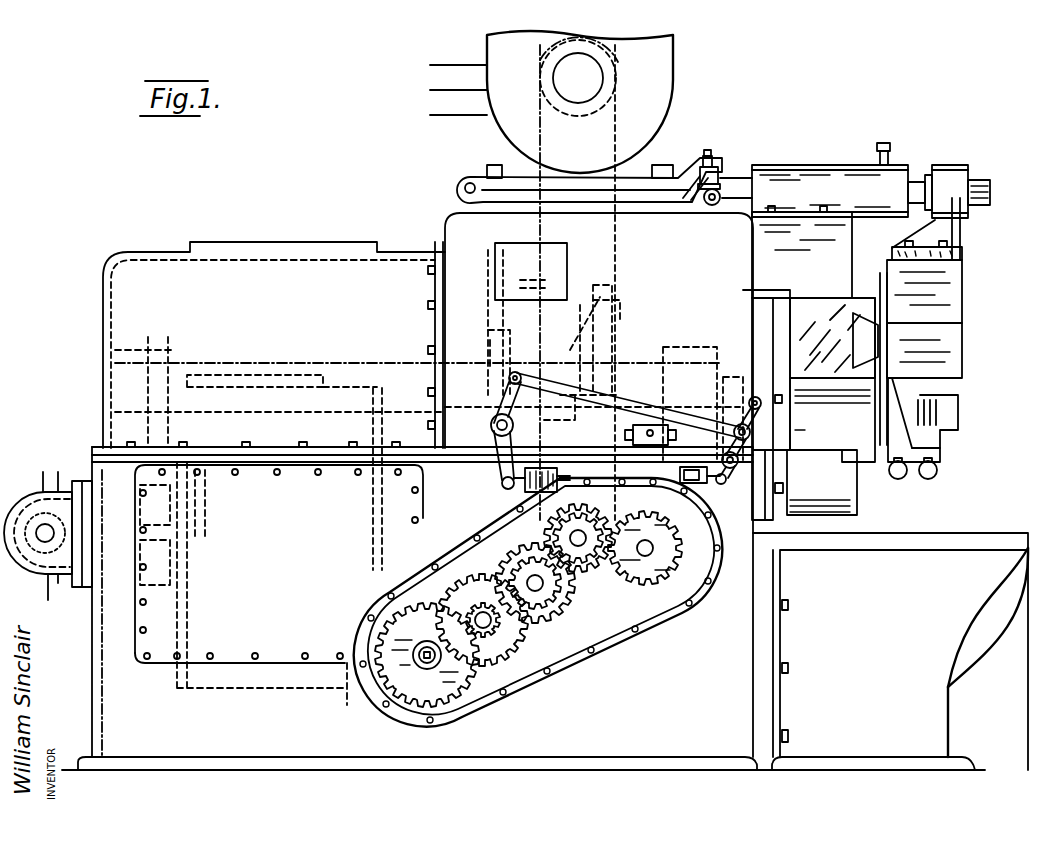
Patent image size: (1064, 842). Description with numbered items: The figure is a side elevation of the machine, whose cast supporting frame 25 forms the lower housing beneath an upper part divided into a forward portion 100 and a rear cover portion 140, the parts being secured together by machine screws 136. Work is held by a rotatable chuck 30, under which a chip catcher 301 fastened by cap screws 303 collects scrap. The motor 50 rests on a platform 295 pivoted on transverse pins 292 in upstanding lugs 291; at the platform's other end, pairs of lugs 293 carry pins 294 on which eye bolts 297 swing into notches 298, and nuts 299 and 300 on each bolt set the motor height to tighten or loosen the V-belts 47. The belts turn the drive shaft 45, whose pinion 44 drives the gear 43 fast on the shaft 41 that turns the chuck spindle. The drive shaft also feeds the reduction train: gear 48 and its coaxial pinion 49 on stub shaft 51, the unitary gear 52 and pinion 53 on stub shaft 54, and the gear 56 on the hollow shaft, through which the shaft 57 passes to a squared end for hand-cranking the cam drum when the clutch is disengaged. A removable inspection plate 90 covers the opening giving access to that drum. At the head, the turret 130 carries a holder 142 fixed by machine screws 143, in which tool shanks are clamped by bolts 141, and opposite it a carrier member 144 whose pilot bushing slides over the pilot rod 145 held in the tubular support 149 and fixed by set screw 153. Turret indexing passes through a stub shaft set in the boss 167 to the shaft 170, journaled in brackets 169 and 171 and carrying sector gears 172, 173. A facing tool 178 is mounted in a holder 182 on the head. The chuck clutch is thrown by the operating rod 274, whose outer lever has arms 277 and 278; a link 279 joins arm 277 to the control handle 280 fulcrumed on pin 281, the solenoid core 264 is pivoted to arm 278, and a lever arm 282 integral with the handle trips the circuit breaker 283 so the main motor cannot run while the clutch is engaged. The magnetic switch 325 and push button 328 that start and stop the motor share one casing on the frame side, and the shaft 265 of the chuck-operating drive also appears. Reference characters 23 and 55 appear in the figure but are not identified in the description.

The pump unit 23 is at (52, 461).
The supporting frame 25 is at (100, 672).
The rotatable chuck 30 is at (817, 497).
The shaft 41 is at (650, 556).
The gear 43 is at (680, 560).
The pinion 44 is at (592, 558).
The drive shaft 45 is at (578, 548).
The V-belts 47 is at (660, 113).
The gear 48 is at (541, 625).
The pinion 49 is at (545, 525).
The motor 50 is at (670, 72).
The stub shaft 51 is at (534, 592).
The gear 52 is at (505, 575).
The pinion 53 is at (450, 608).
The stub shaft 54 is at (488, 662).
The gear casing 55 is at (527, 608).
The gear 56 is at (460, 688).
The shaft 57 is at (427, 668).
The inspection plate 90 is at (270, 598).
The upper portion of housing 100 is at (460, 235).
The turret 130 is at (955, 285).
The machine screws 136 is at (440, 272).
The rear portion of housing 140 is at (148, 268).
The clamping bolts 141 is at (928, 480).
The holder 142 is at (940, 428).
The machine screws 143 is at (950, 404).
The carrier member 144 is at (950, 167).
The pilot rod 145 is at (990, 190).
The tubular support 149 is at (896, 170).
The set screw 153 is at (890, 143).
The boss 167 is at (100, 470).
The bracket 169 is at (105, 440).
The shaft 170 is at (398, 360).
The bracket 171 is at (700, 345).
The sector gear 172 is at (606, 318).
The sector gear 173 is at (490, 342).
The facing tool 178 is at (897, 430).
The tool holder 182 is at (858, 448).
The slidable core 264 is at (520, 490).
The shaft 265 is at (557, 468).
The operating rod 274 is at (491, 433).
The short arm 277 is at (500, 387).
The lever arm 278 is at (522, 446).
The link 279 is at (640, 380).
The control handle 280 is at (772, 417).
The pin 281 is at (752, 466).
The lever arm 282 is at (721, 485).
The circuit breaker 283 is at (686, 467).
The upstanding lugs 291 is at (461, 200).
The transverse pins 292 is at (470, 182).
The upstanding lugs 293 is at (752, 180).
The pins 294 is at (706, 206).
The platform 295 is at (690, 165).
The eye bolts 297 is at (722, 155).
The notches 298 is at (690, 205).
The nut 299 is at (683, 186).
The nut 300 is at (714, 165).
The chip catcher 301 is at (950, 708).
The cap screws 303 is at (790, 668).
The magnetic switch 325 is at (596, 458).
The push button 328 is at (651, 445).